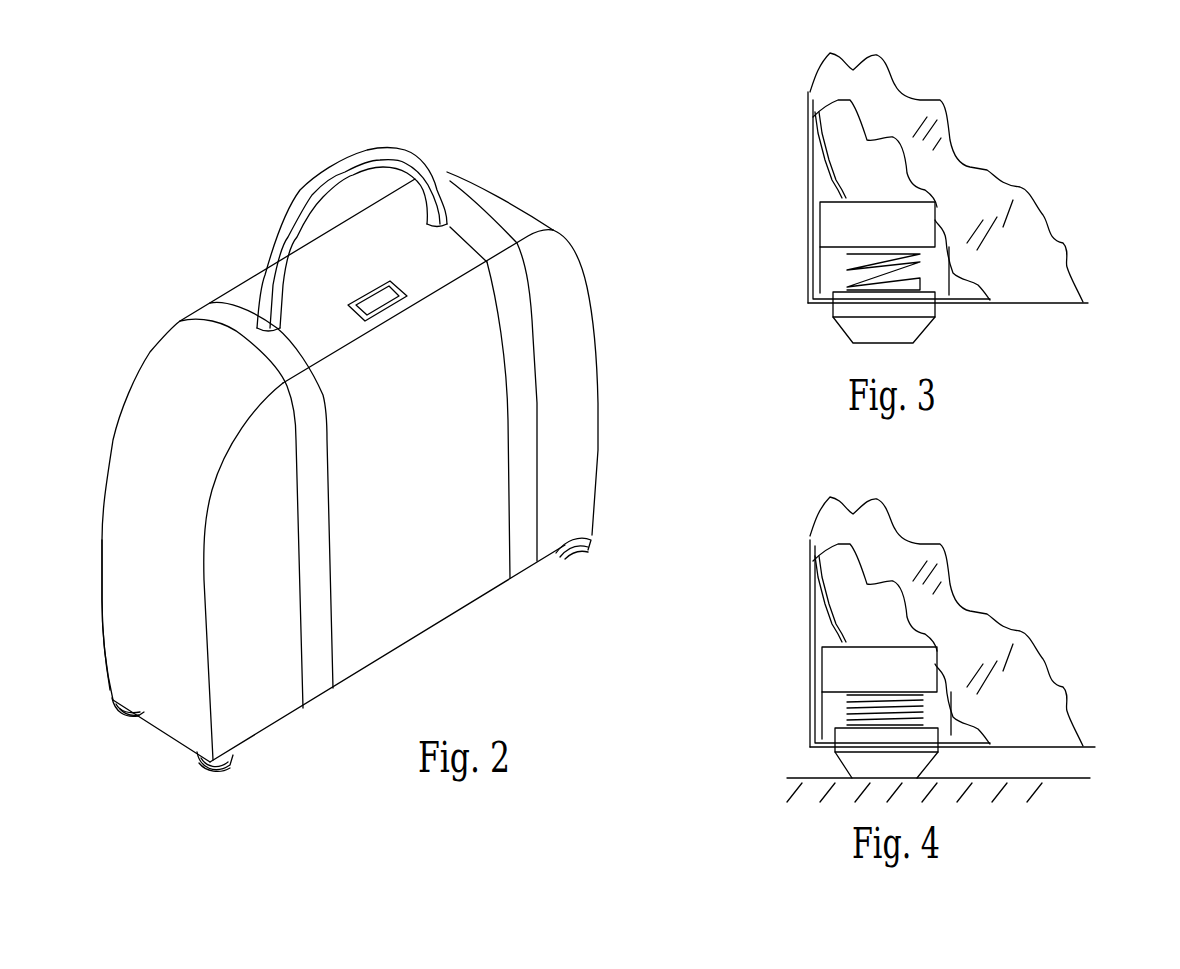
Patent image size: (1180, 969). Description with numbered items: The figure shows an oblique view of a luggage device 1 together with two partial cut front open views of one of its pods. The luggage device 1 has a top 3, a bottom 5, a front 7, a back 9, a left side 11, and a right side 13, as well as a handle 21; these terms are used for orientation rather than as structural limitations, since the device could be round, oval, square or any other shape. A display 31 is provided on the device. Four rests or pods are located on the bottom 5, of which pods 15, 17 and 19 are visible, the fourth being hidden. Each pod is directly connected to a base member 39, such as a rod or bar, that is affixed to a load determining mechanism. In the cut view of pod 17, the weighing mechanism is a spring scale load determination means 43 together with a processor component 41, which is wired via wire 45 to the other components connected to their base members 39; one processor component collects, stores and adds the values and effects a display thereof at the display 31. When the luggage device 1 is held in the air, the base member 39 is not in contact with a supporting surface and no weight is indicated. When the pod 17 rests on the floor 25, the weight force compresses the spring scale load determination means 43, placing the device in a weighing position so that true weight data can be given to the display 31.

In FIG. 2, the luggage device 1 is at (549, 181).
In FIG. 3, the luggage device 1 is at (1051, 149).
In FIG. 4, the luggage device 1 is at (1053, 592).
In FIG. 2, the top 3 is at (458, 176).
In FIG. 2, the bottom 5 is at (273, 728).
In FIG. 3, the bottom 5 is at (1057, 304).
In FIG. 4, the bottom 5 is at (1073, 747).
In FIG. 2, the front 7 is at (443, 563).
In FIG. 3, the front 7 is at (1047, 254).
In FIG. 4, the front 7 is at (1049, 698).
In FIG. 2, the back 9 is at (150, 348).
In FIG. 2, the left side 11 is at (118, 578).
In FIG. 3, the left side 11 is at (818, 74).
In FIG. 4, the left side 11 is at (818, 517).
In FIG. 2, the right side 13 is at (590, 296).
In FIG. 2, the pod 15 is at (130, 714).
In FIG. 2, the pod 17 is at (207, 767).
In FIG. 3, the pod 17 is at (855, 326).
In FIG. 4, the pod 17 is at (852, 758).
In FIG. 2, the pod 19 is at (561, 557).
In FIG. 2, the handle 21 is at (358, 162).
In FIG. 4, the floor 25 is at (1070, 780).
In FIG. 2, the display 31 is at (377, 297).
In FIG. 3, the base member 39 is at (831, 307).
In FIG. 4, the base member 39 is at (853, 736).
In FIG. 3, the processor component 41 is at (840, 228).
In FIG. 4, the processor component 41 is at (842, 673).
In FIG. 3, the spring scale load determination means 43 is at (843, 288).
In FIG. 4, the spring scale load determination means 43 is at (853, 725).
In FIG. 3, the wire 45 is at (827, 150).
In FIG. 4, the wire 45 is at (827, 594).